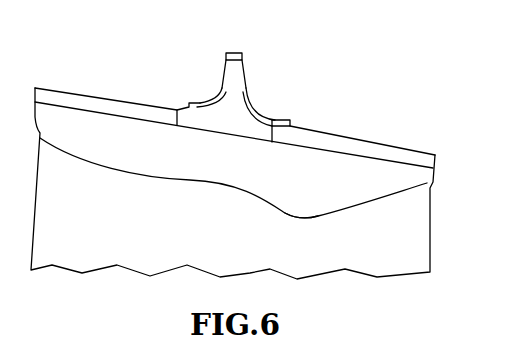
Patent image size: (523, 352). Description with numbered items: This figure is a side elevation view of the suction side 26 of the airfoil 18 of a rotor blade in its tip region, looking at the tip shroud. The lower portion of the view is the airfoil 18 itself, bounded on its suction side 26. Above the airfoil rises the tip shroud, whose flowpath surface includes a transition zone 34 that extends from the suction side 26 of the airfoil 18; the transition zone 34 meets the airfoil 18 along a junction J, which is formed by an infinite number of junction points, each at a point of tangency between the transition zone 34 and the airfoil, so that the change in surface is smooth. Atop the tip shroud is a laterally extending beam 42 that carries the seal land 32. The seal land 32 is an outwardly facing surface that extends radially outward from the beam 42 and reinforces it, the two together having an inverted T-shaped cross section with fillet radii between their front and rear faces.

The airfoil 18 is at (432, 240).
The suction side 26 is at (235, 173).
The seal land 32 is at (229, 52).
The transition zone 34 is at (310, 187).
The beam 42 is at (224, 87).
The junction J is at (342, 210).